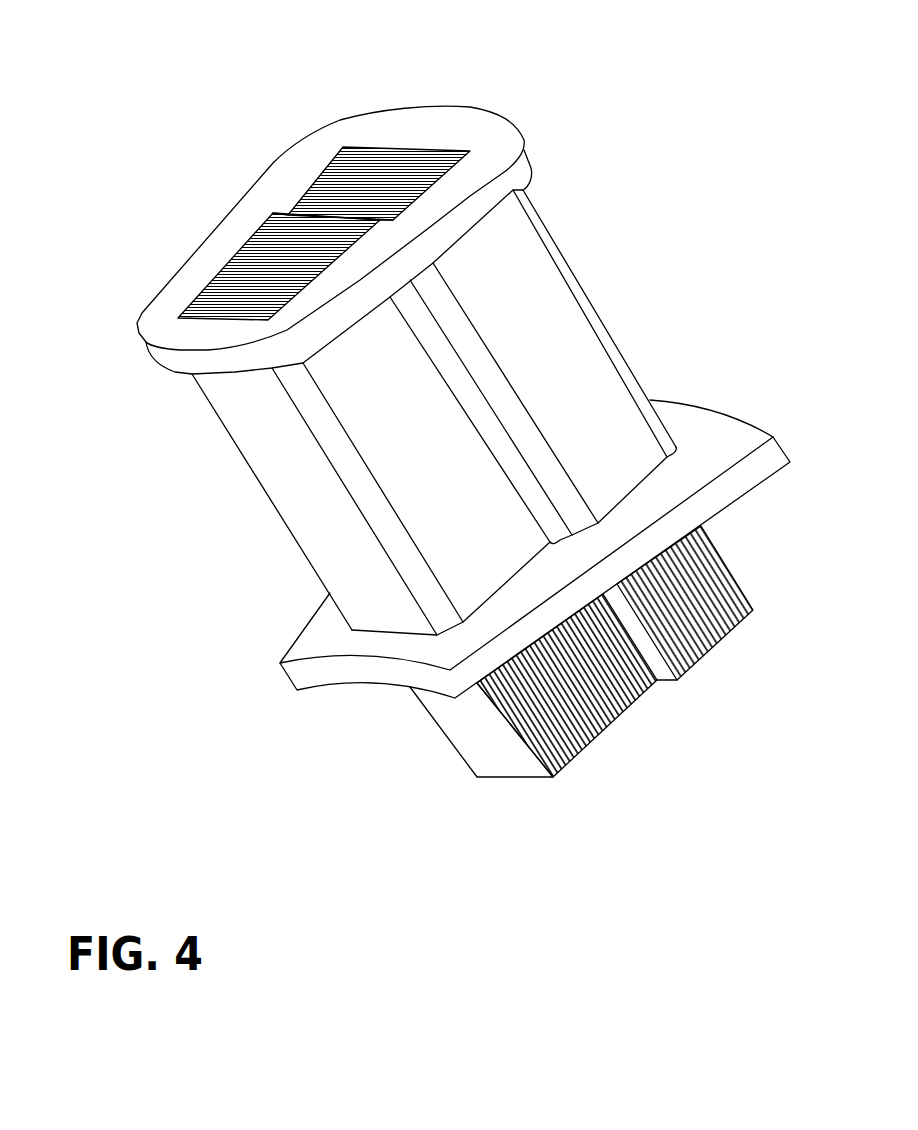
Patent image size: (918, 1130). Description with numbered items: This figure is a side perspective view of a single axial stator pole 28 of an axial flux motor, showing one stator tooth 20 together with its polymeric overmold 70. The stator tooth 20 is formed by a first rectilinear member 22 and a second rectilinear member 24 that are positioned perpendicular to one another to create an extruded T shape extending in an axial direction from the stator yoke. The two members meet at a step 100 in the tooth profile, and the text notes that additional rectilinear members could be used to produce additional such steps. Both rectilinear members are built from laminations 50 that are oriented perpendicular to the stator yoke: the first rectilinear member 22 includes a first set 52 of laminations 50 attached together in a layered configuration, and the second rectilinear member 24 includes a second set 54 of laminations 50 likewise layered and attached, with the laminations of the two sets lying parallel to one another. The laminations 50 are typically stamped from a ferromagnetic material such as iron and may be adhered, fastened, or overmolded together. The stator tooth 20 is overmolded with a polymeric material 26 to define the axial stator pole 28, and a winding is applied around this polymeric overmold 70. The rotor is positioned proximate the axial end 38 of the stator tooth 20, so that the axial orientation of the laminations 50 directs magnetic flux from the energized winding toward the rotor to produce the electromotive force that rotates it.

The stator tooth 20 is at (283, 210).
The first rectilinear member 22 is at (408, 160).
The second rectilinear member 24 is at (228, 268).
The polymeric material 26 is at (523, 157).
The axial stator pole 28 is at (597, 273).
The axial end 38 is at (177, 302).
The polymeric overmold 70 is at (247, 492).
The step 100 is at (482, 416).
The laminations 50 is at (488, 787).
The first set of laminations 52 is at (683, 632).
The second set of laminations 54 is at (518, 752).